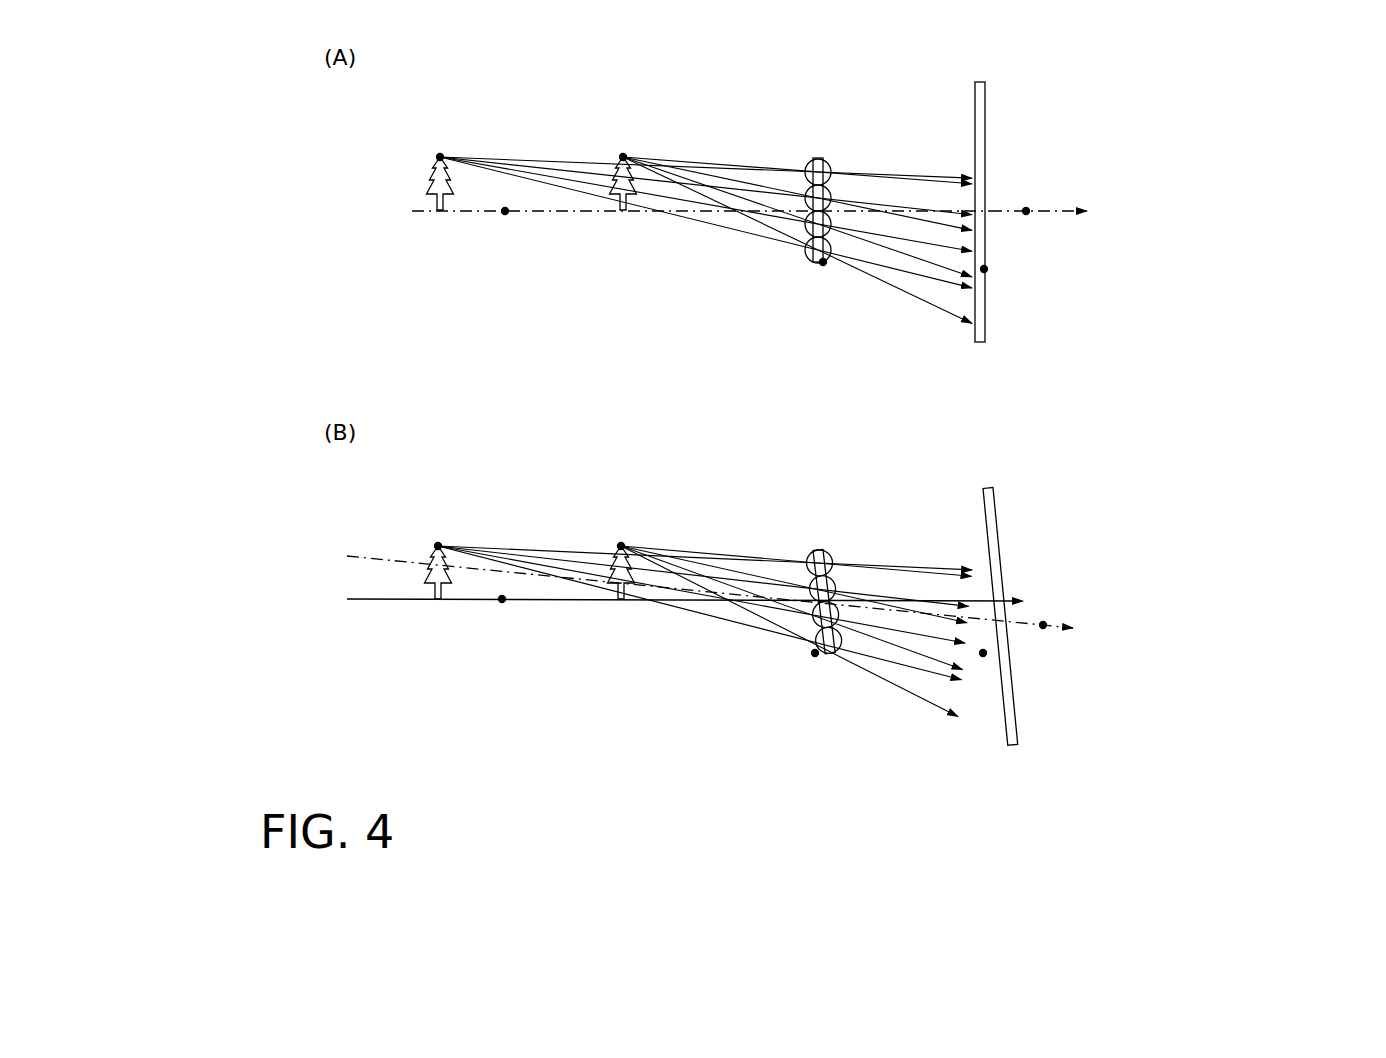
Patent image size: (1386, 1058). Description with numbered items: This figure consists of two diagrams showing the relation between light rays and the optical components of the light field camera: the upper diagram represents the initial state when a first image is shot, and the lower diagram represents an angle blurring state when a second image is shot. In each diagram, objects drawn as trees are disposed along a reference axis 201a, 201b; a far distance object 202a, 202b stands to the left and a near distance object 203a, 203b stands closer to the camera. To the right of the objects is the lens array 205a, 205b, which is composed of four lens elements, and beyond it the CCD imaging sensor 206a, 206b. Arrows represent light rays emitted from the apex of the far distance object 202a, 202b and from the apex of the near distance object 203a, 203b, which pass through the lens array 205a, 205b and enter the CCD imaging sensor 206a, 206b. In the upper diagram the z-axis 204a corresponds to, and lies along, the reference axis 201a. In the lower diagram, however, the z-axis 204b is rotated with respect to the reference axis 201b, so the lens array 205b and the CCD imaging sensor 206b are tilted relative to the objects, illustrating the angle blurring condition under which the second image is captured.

The reference axis 201a is at (505, 211).
The far distance object 202a is at (440, 211).
The near distance object 203a is at (623, 211).
The z-axis 204a is at (1026, 211).
The lens array 205a is at (823, 262).
The CCD imaging sensor 206a is at (984, 269).
The reference axis 201b is at (502, 599).
The far distance object 202b is at (438, 599).
The near distance object 203b is at (621, 599).
The z-axis 204b is at (1043, 625).
The lens array 205b is at (815, 653).
The CCD imaging sensor 206b is at (983, 653).